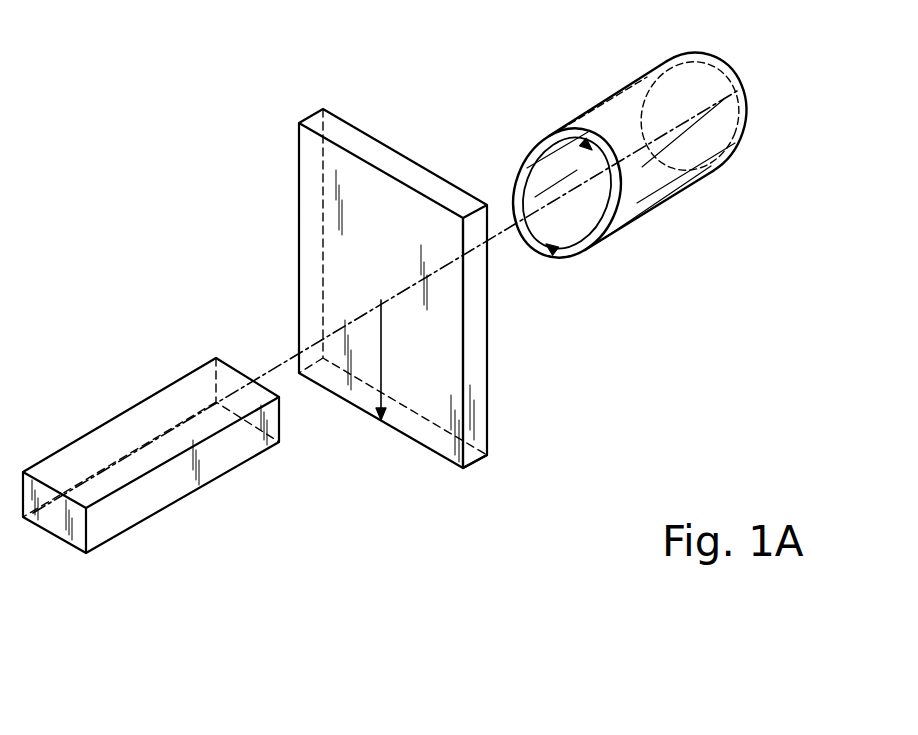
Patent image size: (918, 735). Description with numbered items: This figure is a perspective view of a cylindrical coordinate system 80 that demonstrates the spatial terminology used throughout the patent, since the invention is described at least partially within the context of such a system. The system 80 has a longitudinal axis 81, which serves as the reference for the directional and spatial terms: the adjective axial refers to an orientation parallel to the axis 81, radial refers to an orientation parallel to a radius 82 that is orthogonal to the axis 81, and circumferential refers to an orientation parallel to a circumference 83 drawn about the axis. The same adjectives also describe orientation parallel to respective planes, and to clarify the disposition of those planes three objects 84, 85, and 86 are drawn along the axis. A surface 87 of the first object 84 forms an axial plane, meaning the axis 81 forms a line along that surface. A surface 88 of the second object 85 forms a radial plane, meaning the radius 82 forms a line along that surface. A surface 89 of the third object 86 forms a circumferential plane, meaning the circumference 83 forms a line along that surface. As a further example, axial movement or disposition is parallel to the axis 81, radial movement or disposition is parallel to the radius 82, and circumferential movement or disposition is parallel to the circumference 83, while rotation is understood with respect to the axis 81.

The cylindrical coordinate system 80 is at (252, 163).
The longitudinal axis 81 is at (737, 91).
The radius 82 is at (381, 347).
The circumference 83 is at (516, 147).
The object 84 is at (151, 489).
The object 85 is at (516, 468).
The object 86 is at (686, 210).
The surface 87 is at (92, 448).
The surface 88 is at (410, 305).
The surface 89 is at (619, 151).